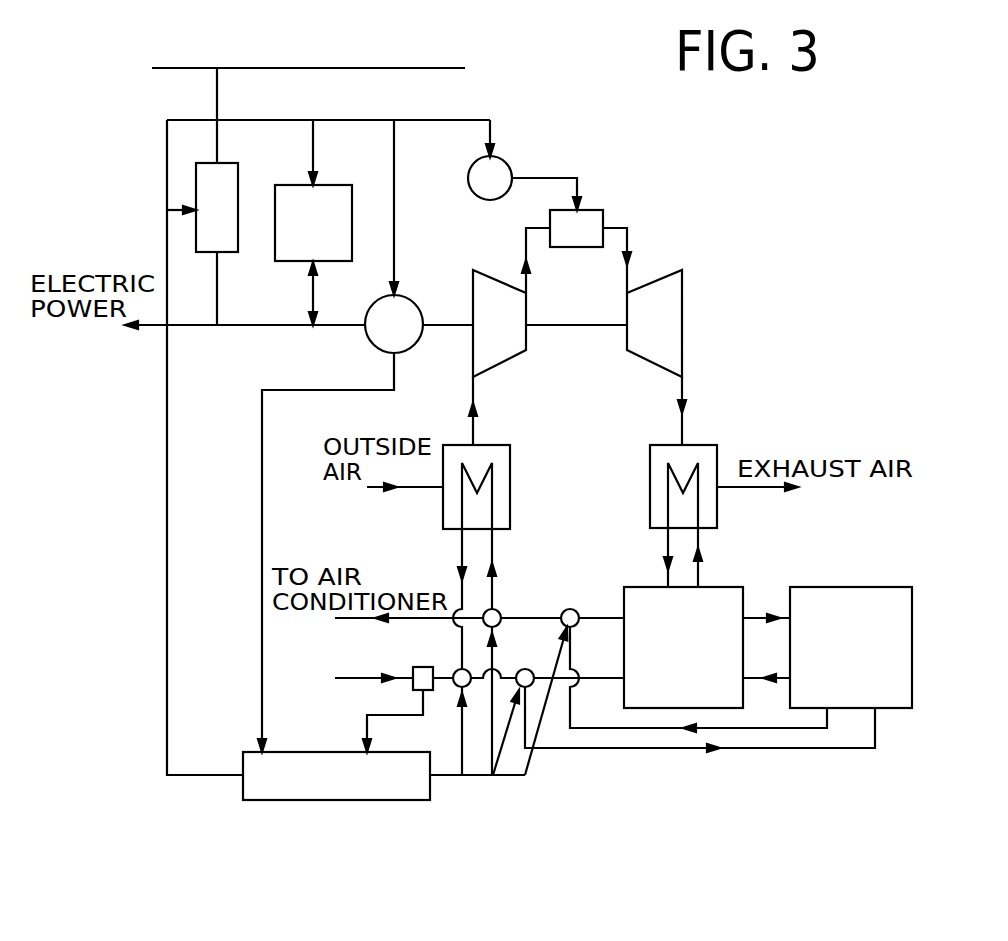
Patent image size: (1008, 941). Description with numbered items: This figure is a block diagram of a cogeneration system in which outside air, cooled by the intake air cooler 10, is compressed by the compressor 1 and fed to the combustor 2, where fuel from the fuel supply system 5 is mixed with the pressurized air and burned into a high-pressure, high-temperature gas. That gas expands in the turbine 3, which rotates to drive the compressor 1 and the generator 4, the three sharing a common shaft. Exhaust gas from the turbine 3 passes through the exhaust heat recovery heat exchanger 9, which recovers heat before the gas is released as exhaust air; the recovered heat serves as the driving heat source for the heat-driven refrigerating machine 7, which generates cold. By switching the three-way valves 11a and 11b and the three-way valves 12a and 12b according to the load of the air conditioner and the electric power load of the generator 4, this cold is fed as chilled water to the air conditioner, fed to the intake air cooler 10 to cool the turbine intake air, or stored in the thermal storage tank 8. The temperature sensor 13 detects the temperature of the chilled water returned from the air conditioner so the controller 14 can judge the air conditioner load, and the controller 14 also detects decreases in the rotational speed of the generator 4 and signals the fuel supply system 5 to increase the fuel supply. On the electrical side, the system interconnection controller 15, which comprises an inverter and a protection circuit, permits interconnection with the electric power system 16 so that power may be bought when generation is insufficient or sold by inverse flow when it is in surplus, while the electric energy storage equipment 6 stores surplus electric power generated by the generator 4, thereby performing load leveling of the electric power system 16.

The compressor 1 is at (502, 368).
The combustor 2 is at (594, 210).
The turbine 3 is at (683, 292).
The generator 4 is at (375, 348).
The fuel supply system 5 is at (502, 160).
The electric energy storage equipment 6 is at (338, 185).
The heat-driven refrigerating machine 7 is at (725, 587).
The thermal storage tank 8 is at (853, 587).
The exhaust heat recovery heat exchanger 9 is at (700, 445).
The intake air cooler 10 is at (510, 460).
The three-way valve 11a is at (456, 687).
The three-way valve 11b is at (495, 609).
The three-way valve 12a is at (528, 668).
The three-way valve 12b is at (571, 609).
The temperature sensor 13 is at (413, 685).
The controller 14 is at (243, 762).
The system interconnection controller 15 is at (238, 178).
The electric power system 16 is at (168, 68).